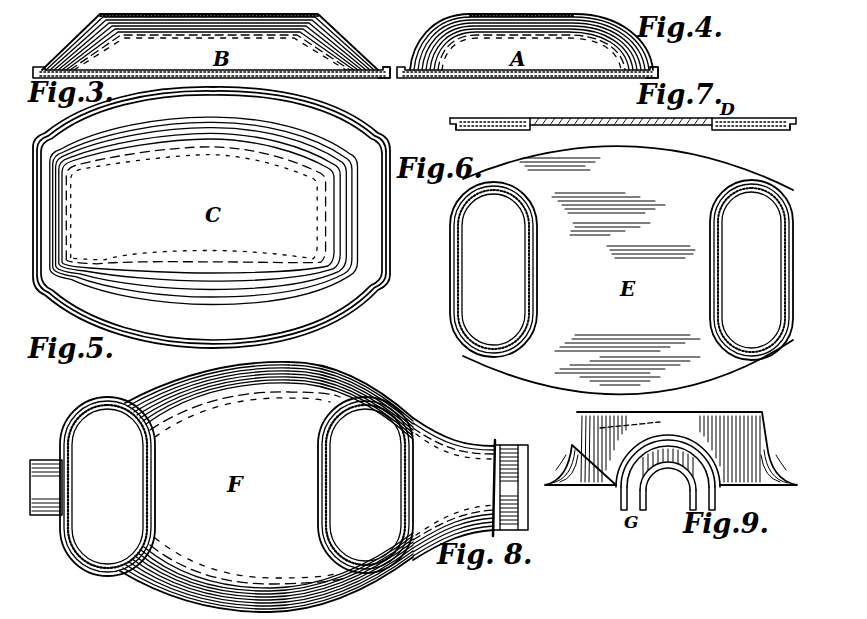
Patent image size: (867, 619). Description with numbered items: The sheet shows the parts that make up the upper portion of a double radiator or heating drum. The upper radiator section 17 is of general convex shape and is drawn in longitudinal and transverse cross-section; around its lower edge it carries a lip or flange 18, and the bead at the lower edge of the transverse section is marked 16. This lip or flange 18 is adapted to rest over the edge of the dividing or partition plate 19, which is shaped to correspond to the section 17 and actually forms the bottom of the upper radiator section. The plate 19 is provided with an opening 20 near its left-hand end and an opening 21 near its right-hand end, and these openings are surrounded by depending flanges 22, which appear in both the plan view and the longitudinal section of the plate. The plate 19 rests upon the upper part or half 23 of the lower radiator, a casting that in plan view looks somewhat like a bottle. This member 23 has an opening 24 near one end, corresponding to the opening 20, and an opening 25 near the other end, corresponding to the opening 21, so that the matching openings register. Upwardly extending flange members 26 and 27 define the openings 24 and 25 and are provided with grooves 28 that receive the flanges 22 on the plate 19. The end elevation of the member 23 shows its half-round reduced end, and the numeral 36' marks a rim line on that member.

In FIG. 4, the flange bead 16 is at (656, 72).
In FIG. 3, the upper radiator section 17 is at (336, 40).
In FIG. 3, the lip or flange 18 is at (386, 67).
In FIG. 7, the dividing or partition plate 19 is at (584, 118).
In FIG. 6, the dividing or partition plate 19 is at (703, 173).
In FIG. 7, the opening 20 is at (472, 117).
In FIG. 6, the opening 20 is at (493, 269).
In FIG. 7, the opening 21 is at (759, 119).
In FIG. 6, the opening 21 is at (751, 270).
In FIG. 7, the flanges 22 is at (531, 128).
In FIG. 8, the upper part or half of the lower radiator 23 is at (303, 381).
In FIG. 8, the opening 24 is at (88, 437).
In FIG. 8, the opening 25 is at (366, 437).
In FIG. 8, the upwardly extending flange member 26 is at (93, 402).
In FIG. 8, the upwardly extending flange member 27 is at (407, 423).
In FIG. 8, the grooves 28 is at (345, 562).
In FIG. 8, the rim line 36' is at (278, 576).